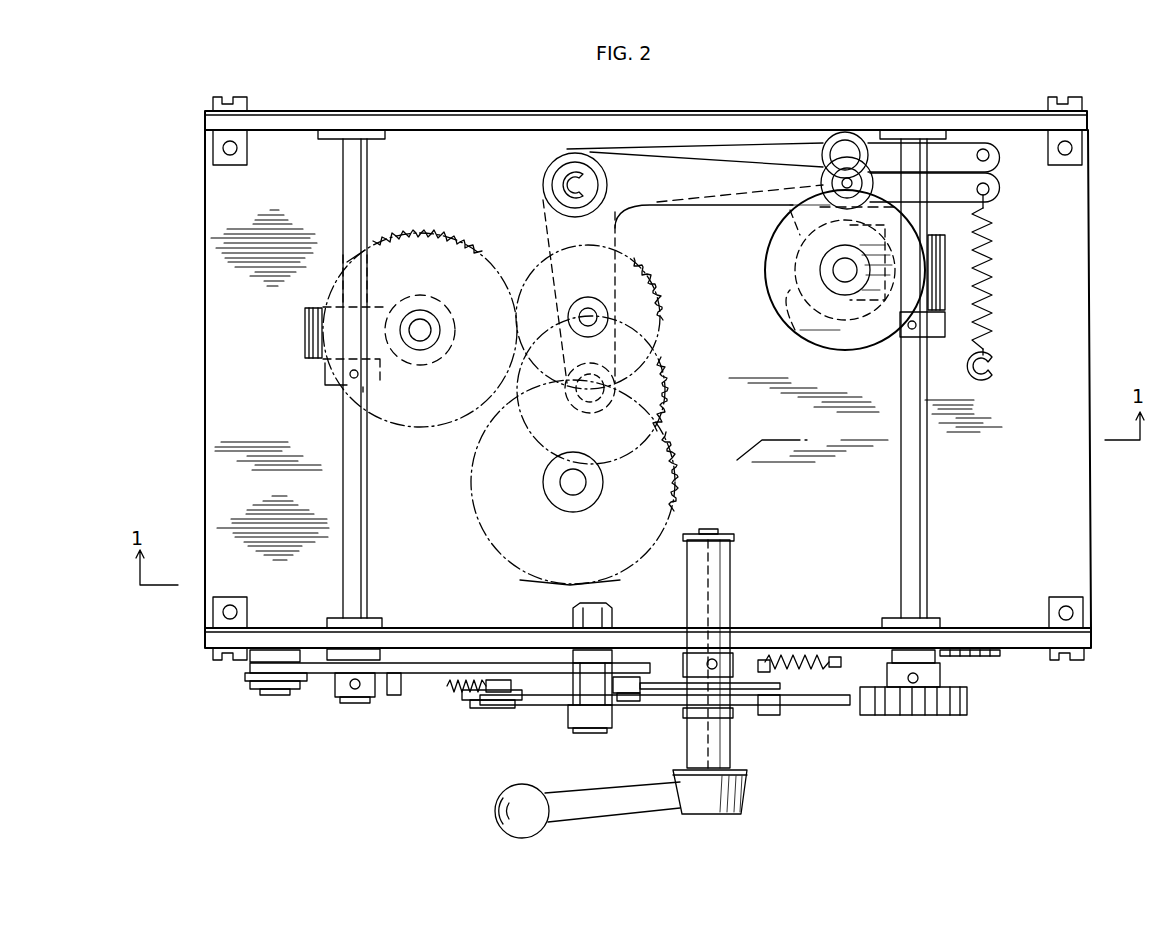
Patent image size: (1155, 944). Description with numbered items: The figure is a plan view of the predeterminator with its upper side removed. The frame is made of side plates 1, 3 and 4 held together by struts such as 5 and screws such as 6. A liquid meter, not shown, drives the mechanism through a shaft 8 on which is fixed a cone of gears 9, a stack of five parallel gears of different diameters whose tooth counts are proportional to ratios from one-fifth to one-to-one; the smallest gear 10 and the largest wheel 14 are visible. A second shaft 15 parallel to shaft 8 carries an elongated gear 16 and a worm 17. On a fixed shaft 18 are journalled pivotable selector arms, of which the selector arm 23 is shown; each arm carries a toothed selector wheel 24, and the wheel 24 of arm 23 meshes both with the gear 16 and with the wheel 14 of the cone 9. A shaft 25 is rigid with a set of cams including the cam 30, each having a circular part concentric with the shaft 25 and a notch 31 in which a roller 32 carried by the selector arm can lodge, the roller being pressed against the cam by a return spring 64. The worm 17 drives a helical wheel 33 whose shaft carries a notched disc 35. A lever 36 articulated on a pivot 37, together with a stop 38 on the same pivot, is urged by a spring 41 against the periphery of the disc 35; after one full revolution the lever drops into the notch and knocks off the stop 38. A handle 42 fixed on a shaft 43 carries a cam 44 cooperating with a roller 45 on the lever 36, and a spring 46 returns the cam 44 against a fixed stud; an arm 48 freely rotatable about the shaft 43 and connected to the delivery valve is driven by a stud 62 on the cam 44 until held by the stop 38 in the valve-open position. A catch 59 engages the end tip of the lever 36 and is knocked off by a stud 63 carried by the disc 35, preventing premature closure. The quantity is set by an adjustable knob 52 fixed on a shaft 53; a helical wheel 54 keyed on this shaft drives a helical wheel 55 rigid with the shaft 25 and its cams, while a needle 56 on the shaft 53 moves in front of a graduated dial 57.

The side plate 1 is at (212, 323).
The side plate 3 is at (1092, 635).
The side plate 4 is at (1088, 122).
The strut 5 is at (213, 146).
The screw 6 is at (238, 100).
The shaft 8 is at (558, 480).
The cone of gears 9 is at (1000, 152).
The gear 10 is at (592, 482).
The gear 14 is at (672, 478).
The second shaft 15 is at (420, 328).
The elongated gear 16 is at (416, 412).
The worm 17 is at (458, 312).
The fixed shaft 18 is at (572, 182).
The selector arm 23 is at (721, 263).
The toothed selector wheel 24 is at (632, 275).
The shaft 25 is at (846, 274).
The cam 30 is at (790, 268).
The notch 31 is at (798, 212).
The roller 32 is at (842, 182).
The helical wheel 33 is at (305, 325).
The disc 35 is at (332, 674).
The lever 36 is at (548, 665).
The pivot 37 is at (575, 642).
The stop 38 is at (500, 704).
The spring 41 is at (448, 688).
The handle 42 is at (508, 806).
The shaft 43 is at (720, 532).
The cam 44 is at (782, 688).
The roller 45 is at (640, 694).
The spring 46 is at (790, 660).
The arm 48 is at (742, 705).
The adjustable knob 52 is at (925, 716).
The shaft 53 is at (926, 470).
The helical wheel 54 is at (946, 326).
The helical wheel 55 is at (812, 286).
The needle 56 is at (942, 668).
The graduated dial 57 is at (997, 658).
The catch 59 is at (255, 682).
The stud 62 is at (775, 707).
The stud 63 is at (394, 696).
The return spring 64 is at (990, 255).